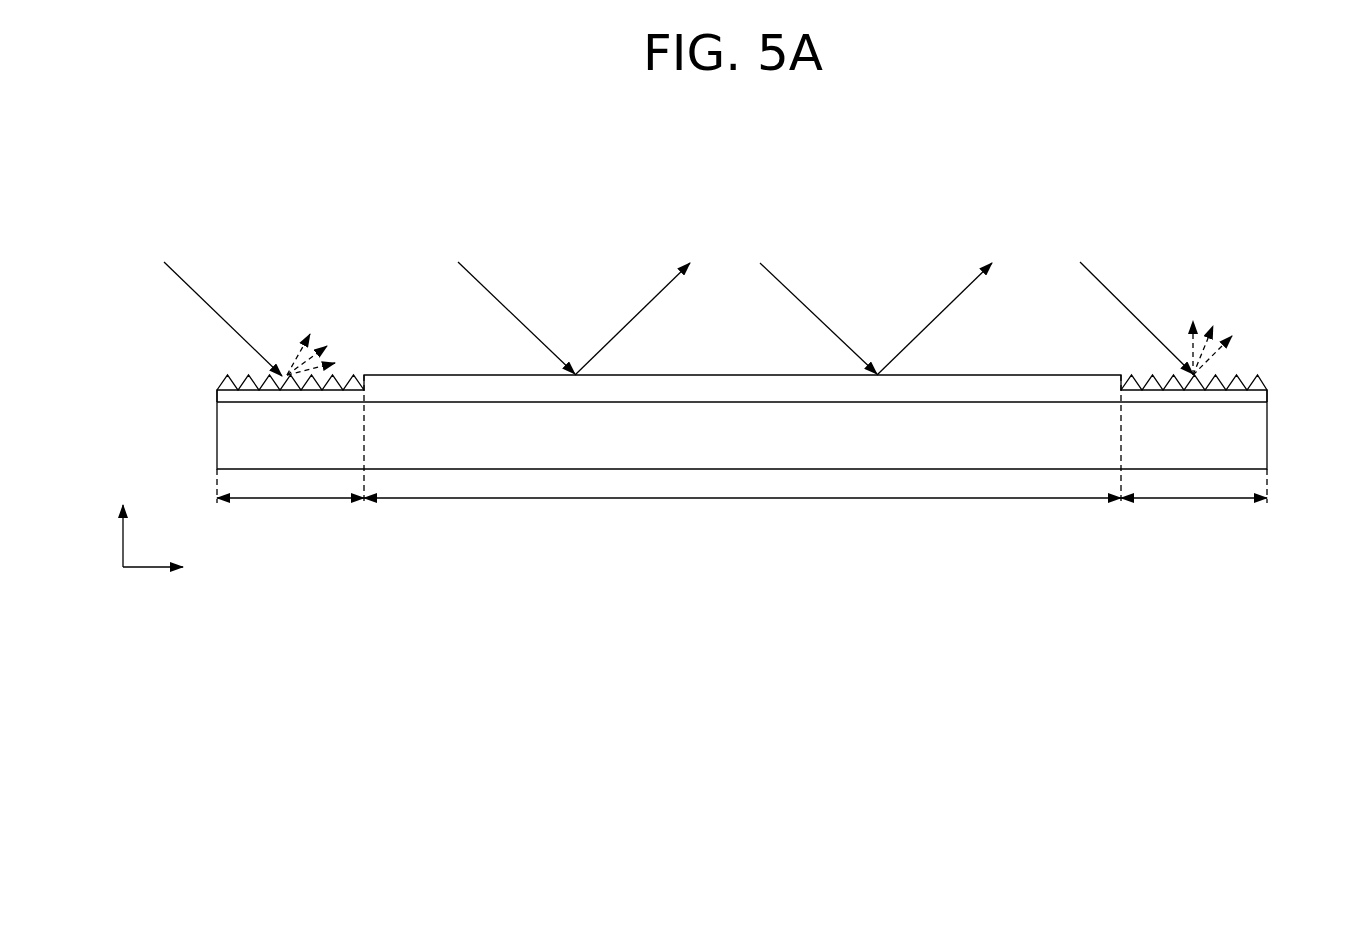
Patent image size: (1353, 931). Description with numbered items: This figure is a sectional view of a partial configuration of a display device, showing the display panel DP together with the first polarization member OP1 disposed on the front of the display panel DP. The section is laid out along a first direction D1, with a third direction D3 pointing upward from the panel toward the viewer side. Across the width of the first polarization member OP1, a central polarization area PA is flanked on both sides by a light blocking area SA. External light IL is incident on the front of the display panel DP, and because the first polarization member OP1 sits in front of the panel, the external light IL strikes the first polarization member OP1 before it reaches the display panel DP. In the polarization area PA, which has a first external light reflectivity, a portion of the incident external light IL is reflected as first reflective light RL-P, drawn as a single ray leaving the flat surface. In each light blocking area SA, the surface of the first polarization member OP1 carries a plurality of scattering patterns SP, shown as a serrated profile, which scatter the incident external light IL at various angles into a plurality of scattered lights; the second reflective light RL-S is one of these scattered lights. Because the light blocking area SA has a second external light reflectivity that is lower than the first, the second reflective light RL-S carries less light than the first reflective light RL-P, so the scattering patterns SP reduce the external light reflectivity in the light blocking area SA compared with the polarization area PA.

The display panel DP is at (1255, 437).
The first polarization member OP1 is at (1255, 395).
The scattering patterns SP is at (222, 376).
The external light IL is at (674, 306).
The first reflective light RL-P is at (795, 304).
The second reflective light RL-S is at (315, 320).
The light blocking area SA is at (742, 451).
The polarization area PA is at (742, 513).
The first direction D1 is at (171, 567).
The third direction D3 is at (126, 523).